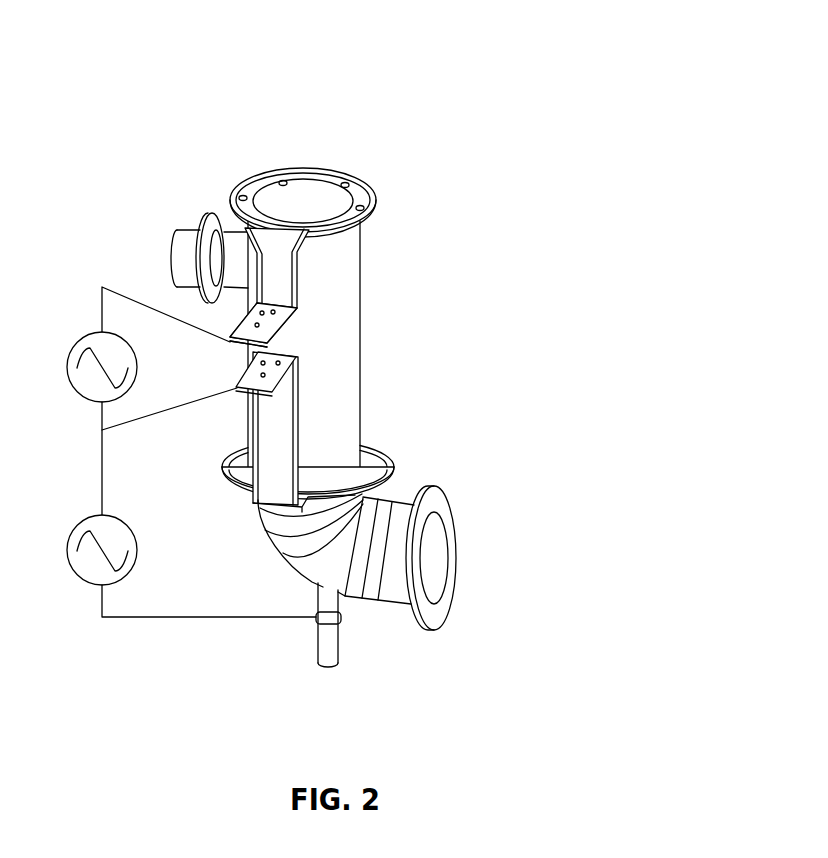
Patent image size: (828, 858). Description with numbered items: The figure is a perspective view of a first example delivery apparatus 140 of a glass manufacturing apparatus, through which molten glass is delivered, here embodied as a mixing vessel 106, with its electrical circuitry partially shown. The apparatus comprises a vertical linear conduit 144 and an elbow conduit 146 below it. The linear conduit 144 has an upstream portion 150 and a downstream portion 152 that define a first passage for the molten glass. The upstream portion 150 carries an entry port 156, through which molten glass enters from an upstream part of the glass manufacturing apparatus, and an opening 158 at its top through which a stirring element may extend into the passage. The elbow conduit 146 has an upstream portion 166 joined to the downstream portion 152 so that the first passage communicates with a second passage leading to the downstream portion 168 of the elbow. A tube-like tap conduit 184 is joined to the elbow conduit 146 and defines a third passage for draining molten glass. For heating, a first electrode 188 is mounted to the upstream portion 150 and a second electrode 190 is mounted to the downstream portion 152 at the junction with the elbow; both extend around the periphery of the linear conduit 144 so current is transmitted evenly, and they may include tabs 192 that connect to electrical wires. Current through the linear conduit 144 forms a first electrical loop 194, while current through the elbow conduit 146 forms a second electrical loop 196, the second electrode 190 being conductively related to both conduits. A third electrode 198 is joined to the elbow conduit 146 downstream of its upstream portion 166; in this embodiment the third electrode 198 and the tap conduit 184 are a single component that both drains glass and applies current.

The delivery apparatus 140 is at (372, 348).
The mixing vessel 106 is at (372, 402).
The opening 158 is at (352, 158).
The upstream portion 150 is at (365, 341).
The downstream portion 152 is at (365, 354).
The linear conduit 144 is at (360, 332).
The first electrode 188 is at (305, 232).
The tabs 192 is at (230, 342).
The upstream portion 166 is at (233, 494).
The entry port 156 is at (195, 230).
The second electrode 190 is at (393, 460).
The elbow conduit 146 is at (282, 558).
The downstream portion 168 is at (363, 622).
The tap conduit 184 is at (252, 629).
The third electrode 198 is at (318, 636).
The first electrical loop 194 is at (96, 322).
The second electrical loop 196 is at (94, 603).